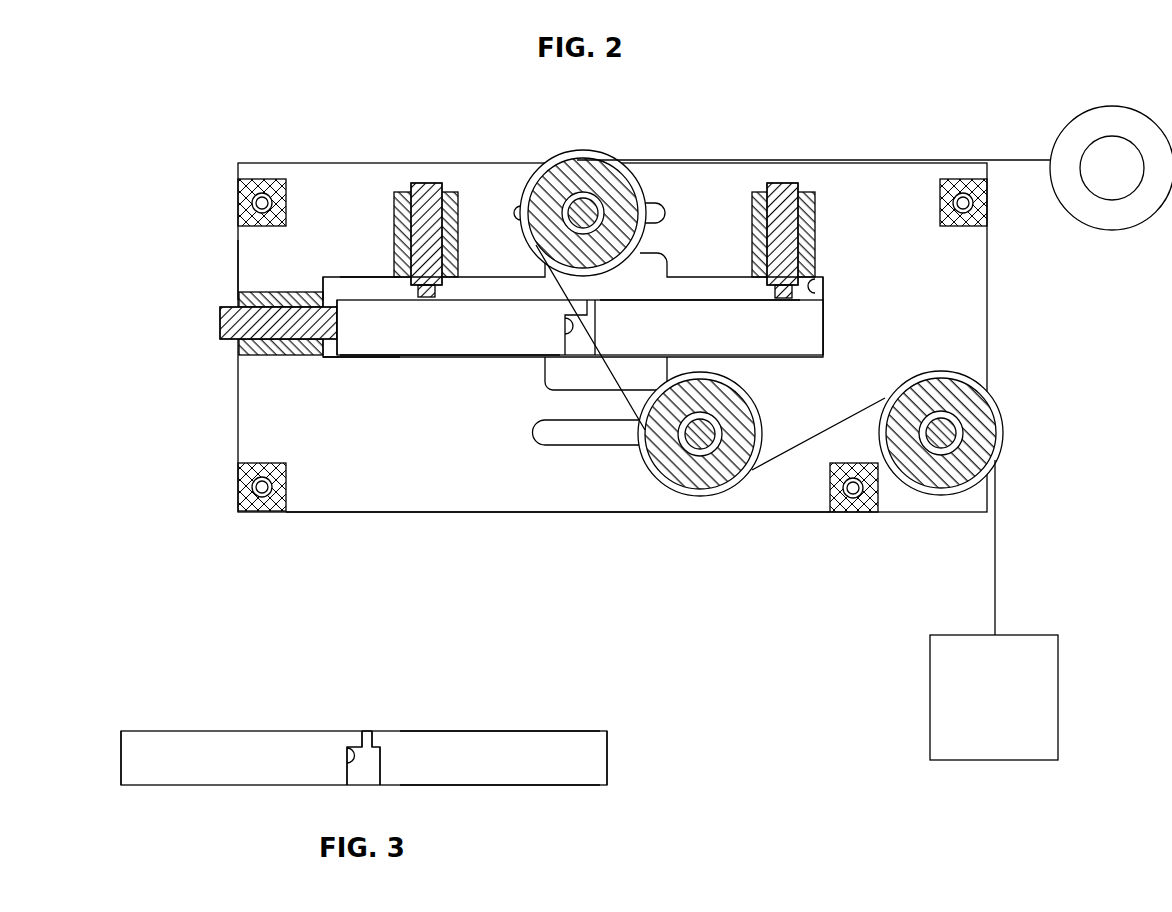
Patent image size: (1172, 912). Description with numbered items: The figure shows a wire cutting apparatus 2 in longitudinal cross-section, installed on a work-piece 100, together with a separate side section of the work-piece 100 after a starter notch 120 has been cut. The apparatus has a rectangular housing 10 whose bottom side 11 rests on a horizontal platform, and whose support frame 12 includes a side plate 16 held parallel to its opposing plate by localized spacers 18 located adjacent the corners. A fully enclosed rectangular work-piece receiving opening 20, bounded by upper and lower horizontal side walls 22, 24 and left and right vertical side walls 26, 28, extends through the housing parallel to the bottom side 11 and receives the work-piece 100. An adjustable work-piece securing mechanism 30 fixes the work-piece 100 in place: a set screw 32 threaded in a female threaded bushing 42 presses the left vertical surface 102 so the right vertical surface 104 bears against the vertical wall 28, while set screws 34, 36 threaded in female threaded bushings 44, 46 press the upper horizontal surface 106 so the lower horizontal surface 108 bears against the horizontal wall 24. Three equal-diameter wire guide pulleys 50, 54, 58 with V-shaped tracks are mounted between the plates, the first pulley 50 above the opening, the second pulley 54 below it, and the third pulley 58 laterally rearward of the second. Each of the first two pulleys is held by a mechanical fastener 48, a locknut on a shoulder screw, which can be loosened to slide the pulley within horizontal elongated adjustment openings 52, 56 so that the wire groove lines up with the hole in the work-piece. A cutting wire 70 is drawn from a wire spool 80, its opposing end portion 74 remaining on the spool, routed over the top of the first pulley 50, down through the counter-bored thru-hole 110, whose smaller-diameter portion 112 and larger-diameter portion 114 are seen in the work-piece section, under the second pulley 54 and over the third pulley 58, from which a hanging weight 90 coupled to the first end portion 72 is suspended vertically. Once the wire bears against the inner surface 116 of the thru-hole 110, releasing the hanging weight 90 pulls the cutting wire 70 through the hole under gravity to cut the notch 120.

In FIG. 2, the wire cutting apparatus 2 is at (737, 662).
In FIG. 2, the housing 10 is at (238, 118).
In FIG. 2, the bottom side 11 is at (316, 512).
In FIG. 2, the support frame 12 is at (393, 152).
In FIG. 2, the side plate 16 is at (268, 262).
In FIG. 2, the spacers 18 is at (1018, 243).
In FIG. 2, the work-piece receiving opening 20 is at (505, 277).
In FIG. 2, the horizontal side wall 22 is at (367, 280).
In FIG. 2, the horizontal side wall 24 is at (318, 358).
In FIG. 2, the vertical side wall 26 is at (324, 280).
In FIG. 2, the vertical side wall 28 is at (812, 285).
In FIG. 2, the adjustable work-piece securing mechanism 30 is at (178, 343).
In FIG. 2, the set screw 32 is at (228, 352).
In FIG. 2, the set screw 34 is at (426, 192).
In FIG. 2, the set screw 36 is at (782, 190).
In FIG. 2, the female threaded bushing 42 is at (240, 293).
In FIG. 2, the female threaded bushing 44 is at (458, 192).
In FIG. 2, the female threaded bushing 46 is at (805, 192).
In FIG. 2, the mechanical fastener 48 is at (1055, 385).
In FIG. 2, the first wire guide pulley 50 is at (582, 185).
In FIG. 2, the horizontal elongated adjustment opening 52 is at (656, 202).
In FIG. 2, the second wire guide pulley 54 is at (693, 497).
In FIG. 2, the horizontal elongated adjustment opening 56 is at (552, 437).
In FIG. 2, the third wire guide pulley 58 is at (978, 440).
In FIG. 2, the cutting wire 70 is at (1015, 558).
In FIG. 2, the first end portion 72 is at (995, 588).
In FIG. 2, the opposing end portion 74 is at (1003, 160).
In FIG. 2, the wire spool 80 is at (1111, 168).
In FIG. 2, the hanging weight 90 is at (994, 697).
In FIG. 2, the work-piece 100 is at (842, 310).
In FIG. 3, the work-piece 100 is at (195, 695).
In FIG. 2, the vertical surface 102 is at (338, 303).
In FIG. 3, the vertical surface 102 is at (121, 766).
In FIG. 2, the vertical surface 104 is at (823, 335).
In FIG. 3, the vertical surface 104 is at (645, 775).
In FIG. 2, the horizontal surface 106 is at (690, 298).
In FIG. 3, the horizontal surface 106 is at (458, 731).
In FIG. 2, the horizontal surface 108 is at (433, 357).
In FIG. 3, the horizontal surface 108 is at (505, 785).
In FIG. 2, the thru-hole 110 is at (600, 327).
In FIG. 3, the thru-hole 110 is at (398, 765).
In FIG. 3, the thru-hole portion 112 is at (355, 740).
In FIG. 3, the thru-hole portion 114 is at (365, 776).
In FIG. 2, the inner surface 116 is at (567, 345).
In FIG. 3, the inner surface 116 is at (347, 757).
In FIG. 3, the notch 120 is at (362, 730).